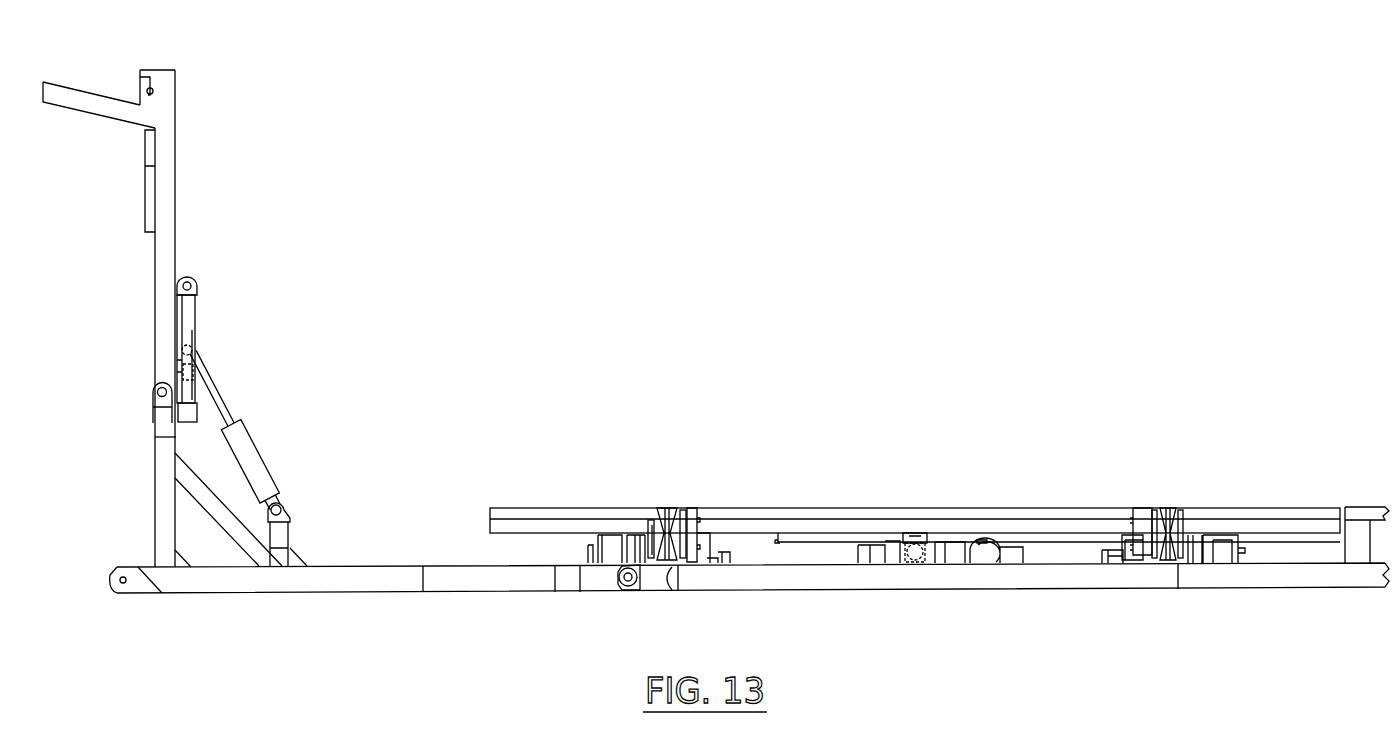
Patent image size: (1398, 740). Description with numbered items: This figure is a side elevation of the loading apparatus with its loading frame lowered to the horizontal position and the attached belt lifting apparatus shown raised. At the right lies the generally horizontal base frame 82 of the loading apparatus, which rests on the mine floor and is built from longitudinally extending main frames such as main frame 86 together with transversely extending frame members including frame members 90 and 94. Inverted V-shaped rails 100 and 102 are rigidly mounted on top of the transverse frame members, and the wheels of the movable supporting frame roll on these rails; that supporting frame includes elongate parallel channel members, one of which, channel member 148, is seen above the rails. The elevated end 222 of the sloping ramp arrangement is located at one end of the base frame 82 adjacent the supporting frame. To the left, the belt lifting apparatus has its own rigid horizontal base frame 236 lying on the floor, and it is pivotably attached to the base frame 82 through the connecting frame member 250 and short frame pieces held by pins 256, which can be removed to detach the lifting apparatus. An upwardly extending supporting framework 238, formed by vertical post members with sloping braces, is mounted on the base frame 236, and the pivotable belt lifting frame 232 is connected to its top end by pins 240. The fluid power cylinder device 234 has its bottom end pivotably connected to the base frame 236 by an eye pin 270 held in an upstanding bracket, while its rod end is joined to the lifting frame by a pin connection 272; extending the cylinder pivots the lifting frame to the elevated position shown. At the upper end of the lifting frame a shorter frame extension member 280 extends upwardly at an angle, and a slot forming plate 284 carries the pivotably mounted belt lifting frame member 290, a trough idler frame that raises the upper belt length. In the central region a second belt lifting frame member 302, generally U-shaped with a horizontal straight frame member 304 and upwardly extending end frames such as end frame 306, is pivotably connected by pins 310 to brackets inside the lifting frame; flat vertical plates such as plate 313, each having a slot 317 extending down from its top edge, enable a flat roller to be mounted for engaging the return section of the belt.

The base frame 82 is at (972, 573).
The main frame 86 is at (823, 577).
The transverse frame member 90 is at (1027, 558).
The transverse frame member 94 is at (873, 556).
The inverted V-shaped rail 100 is at (1167, 563).
The inverted V-shaped rail 102 is at (668, 590).
The channel member 148 is at (807, 512).
The elevated end 222 is at (1360, 515).
The belt lifting frame 232 is at (166, 222).
The fluid power cylinder device 234 is at (252, 462).
The base frame 236 is at (346, 578).
The supporting framework 238 is at (162, 506).
The pin 240 is at (152, 394).
The connecting frame member 250 is at (563, 587).
The pin 256 is at (632, 588).
The eye pin 270 is at (284, 511).
The pin connection 272 is at (194, 345).
The frame extension member 280 is at (98, 102).
The slot forming plate 284 is at (173, 80).
The belt lifting frame member 290 is at (145, 195).
The second belt lifting frame member 302 is at (188, 311).
The horizontal straight frame member 304 is at (178, 437).
The end frame 306 is at (185, 326).
The pin 310 is at (200, 277).
The vertical plate 313 is at (218, 398).
The slot 317 is at (200, 366).